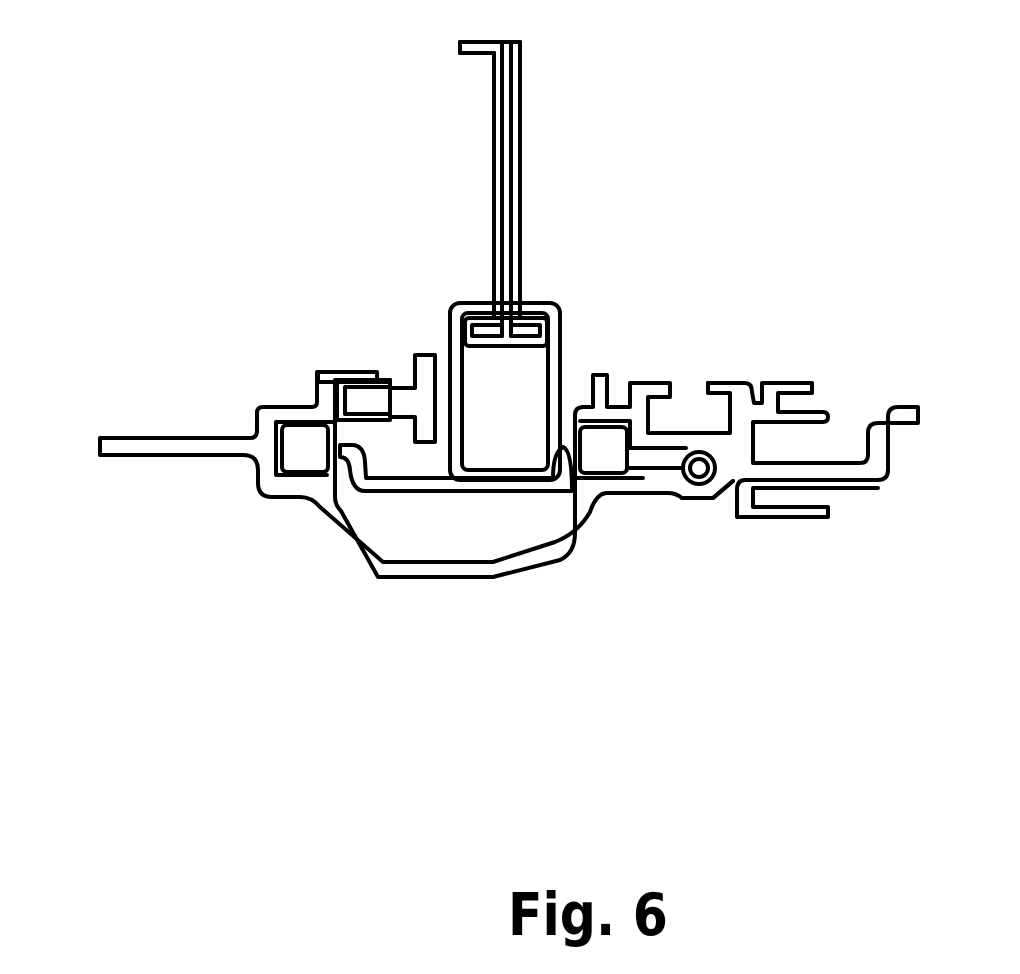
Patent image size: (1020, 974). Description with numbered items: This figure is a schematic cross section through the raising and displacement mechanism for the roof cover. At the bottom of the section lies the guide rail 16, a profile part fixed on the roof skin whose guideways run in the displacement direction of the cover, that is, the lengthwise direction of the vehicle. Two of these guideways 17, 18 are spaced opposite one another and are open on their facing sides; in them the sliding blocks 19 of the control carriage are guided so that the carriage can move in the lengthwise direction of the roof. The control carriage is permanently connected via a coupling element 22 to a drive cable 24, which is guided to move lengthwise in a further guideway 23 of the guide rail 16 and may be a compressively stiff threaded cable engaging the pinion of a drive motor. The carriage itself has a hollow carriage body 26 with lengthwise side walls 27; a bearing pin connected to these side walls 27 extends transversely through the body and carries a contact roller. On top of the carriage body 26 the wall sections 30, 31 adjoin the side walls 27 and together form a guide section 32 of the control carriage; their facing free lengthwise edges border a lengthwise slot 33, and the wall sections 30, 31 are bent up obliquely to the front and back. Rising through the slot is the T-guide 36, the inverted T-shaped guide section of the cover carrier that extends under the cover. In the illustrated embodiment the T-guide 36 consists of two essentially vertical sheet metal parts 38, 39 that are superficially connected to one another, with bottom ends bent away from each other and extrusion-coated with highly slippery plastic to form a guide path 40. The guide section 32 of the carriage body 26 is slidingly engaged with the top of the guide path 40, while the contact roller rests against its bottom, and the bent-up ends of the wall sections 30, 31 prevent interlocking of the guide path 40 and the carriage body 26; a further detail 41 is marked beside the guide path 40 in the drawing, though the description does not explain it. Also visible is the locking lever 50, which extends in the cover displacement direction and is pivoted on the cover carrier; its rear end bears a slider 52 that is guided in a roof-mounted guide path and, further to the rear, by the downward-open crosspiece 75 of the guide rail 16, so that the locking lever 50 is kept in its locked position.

The guide rail 16 is at (148, 447).
The guideway 17 is at (305, 474).
The guideway 18 is at (603, 425).
The sliding block 19 is at (295, 433).
The coupling element 22 is at (651, 465).
The further guideway 23 is at (702, 480).
The drive cable 24 is at (693, 452).
The carriage body 26 is at (537, 395).
The lengthwise side wall 27 is at (455, 433).
The wall section 30 is at (478, 303).
The wall section 31 is at (537, 307).
The guide section 32 is at (483, 270).
The lengthwise slot 33 is at (520, 300).
The T-guide 36 is at (573, 170).
The sheet metal part 38 is at (497, 73).
The sheet metal part 39 is at (515, 100).
The guide path 40 is at (503, 338).
The right clip slot 41 is at (524, 345).
The locking lever 50 is at (423, 372).
The slider 52 is at (357, 407).
The crosspiece 75 is at (357, 377).